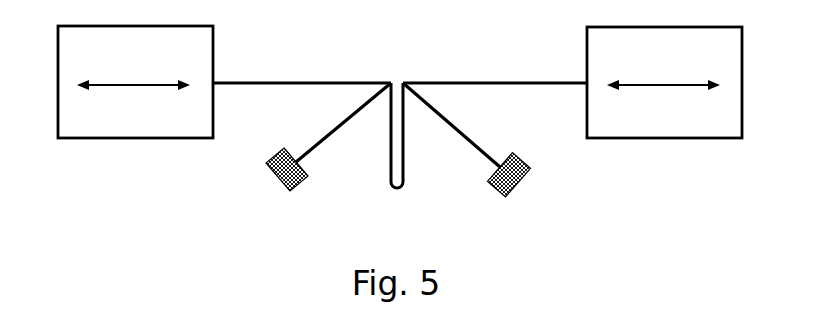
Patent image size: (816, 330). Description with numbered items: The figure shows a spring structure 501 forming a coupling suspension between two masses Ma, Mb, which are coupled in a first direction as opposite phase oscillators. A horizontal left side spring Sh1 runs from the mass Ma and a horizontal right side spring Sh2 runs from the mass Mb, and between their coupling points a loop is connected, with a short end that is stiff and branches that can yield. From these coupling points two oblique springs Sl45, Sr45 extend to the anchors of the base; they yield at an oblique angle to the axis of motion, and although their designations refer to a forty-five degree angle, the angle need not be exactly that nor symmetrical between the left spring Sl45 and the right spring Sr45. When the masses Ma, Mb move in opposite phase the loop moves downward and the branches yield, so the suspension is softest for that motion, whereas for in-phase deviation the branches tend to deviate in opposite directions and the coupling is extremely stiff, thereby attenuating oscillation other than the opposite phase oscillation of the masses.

The spring structure 501 is at (387, 153).
The mass Ma is at (135, 82).
The mass Mb is at (664, 82).
The horizontal left side spring Sh1 is at (302, 57).
The horizontal right side spring Sh2 is at (495, 57).
The left oblique spring Sl45 is at (310, 154).
The right oblique spring Sr45 is at (483, 159).